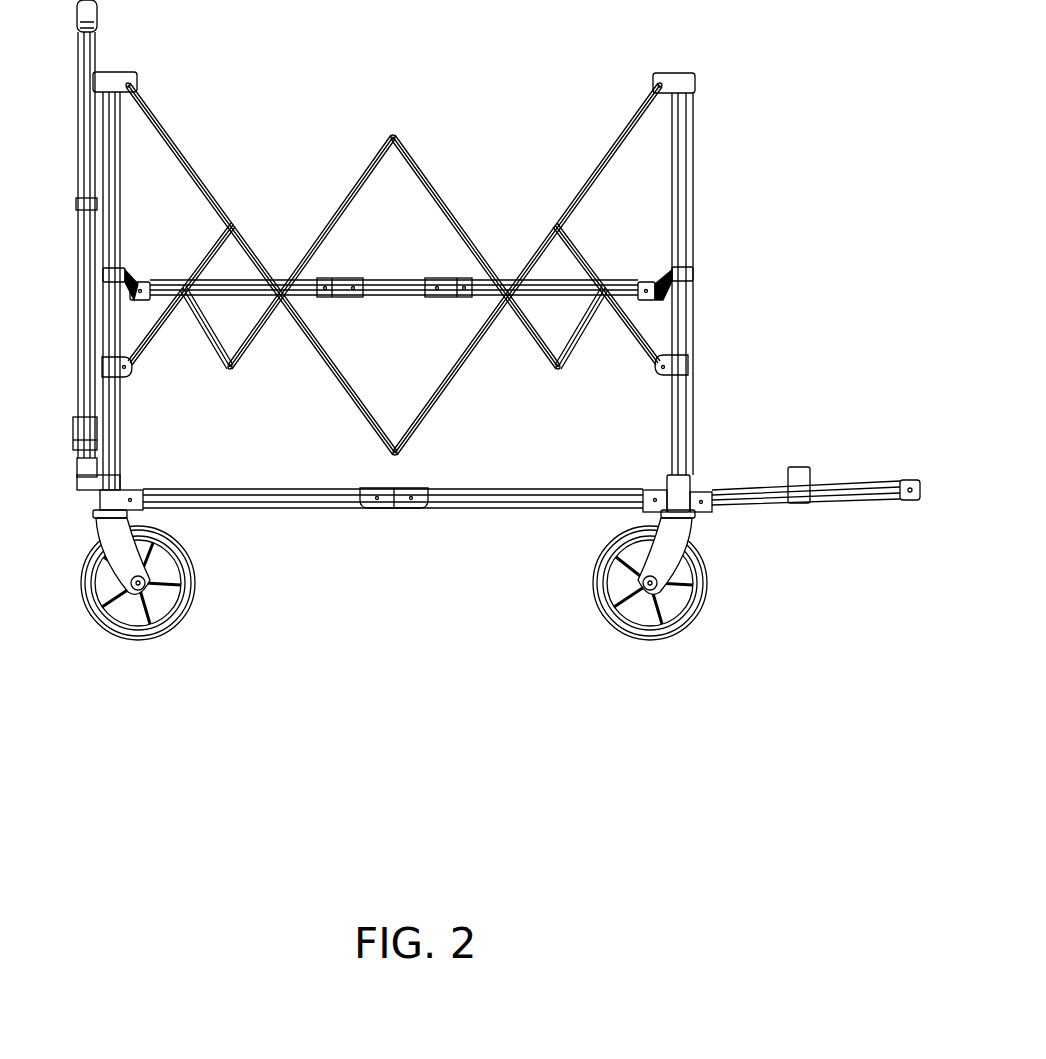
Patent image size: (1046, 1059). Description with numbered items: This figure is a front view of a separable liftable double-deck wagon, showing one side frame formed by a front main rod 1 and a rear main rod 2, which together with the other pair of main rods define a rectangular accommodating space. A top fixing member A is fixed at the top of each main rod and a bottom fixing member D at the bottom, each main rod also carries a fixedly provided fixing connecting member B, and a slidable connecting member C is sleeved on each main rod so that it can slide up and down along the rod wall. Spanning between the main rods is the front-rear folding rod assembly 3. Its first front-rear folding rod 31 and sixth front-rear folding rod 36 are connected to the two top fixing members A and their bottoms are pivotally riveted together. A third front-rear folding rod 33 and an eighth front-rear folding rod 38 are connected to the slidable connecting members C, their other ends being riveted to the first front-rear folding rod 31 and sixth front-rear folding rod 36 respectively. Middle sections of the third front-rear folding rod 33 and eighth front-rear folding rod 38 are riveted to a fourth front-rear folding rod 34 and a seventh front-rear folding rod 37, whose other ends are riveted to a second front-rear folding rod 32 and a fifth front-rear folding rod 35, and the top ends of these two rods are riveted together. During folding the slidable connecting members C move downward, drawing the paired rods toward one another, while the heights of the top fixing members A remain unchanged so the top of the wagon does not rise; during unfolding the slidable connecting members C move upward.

The front main rod 1 is at (105, 140).
The rear main rod 2 is at (690, 165).
The front-rear folding rod assembly 3 is at (359, 123).
The first front-rear folding rod 31 is at (192, 163).
The second front-rear folding rod 32 is at (342, 213).
The third front-rear folding rod 33 is at (153, 333).
The fourth front-rear folding rod 34 is at (210, 347).
The fifth front-rear folding rod 35 is at (448, 207).
The sixth front-rear folding rod 36 is at (597, 163).
The seventh front-rear folding rod 37 is at (575, 365).
The eighth front-rear folding rod 38 is at (633, 340).
The top fixing member A is at (687, 75).
The fixing connecting member B is at (693, 277).
The slidable connecting member C is at (690, 375).
The bottom fixing member D is at (680, 492).